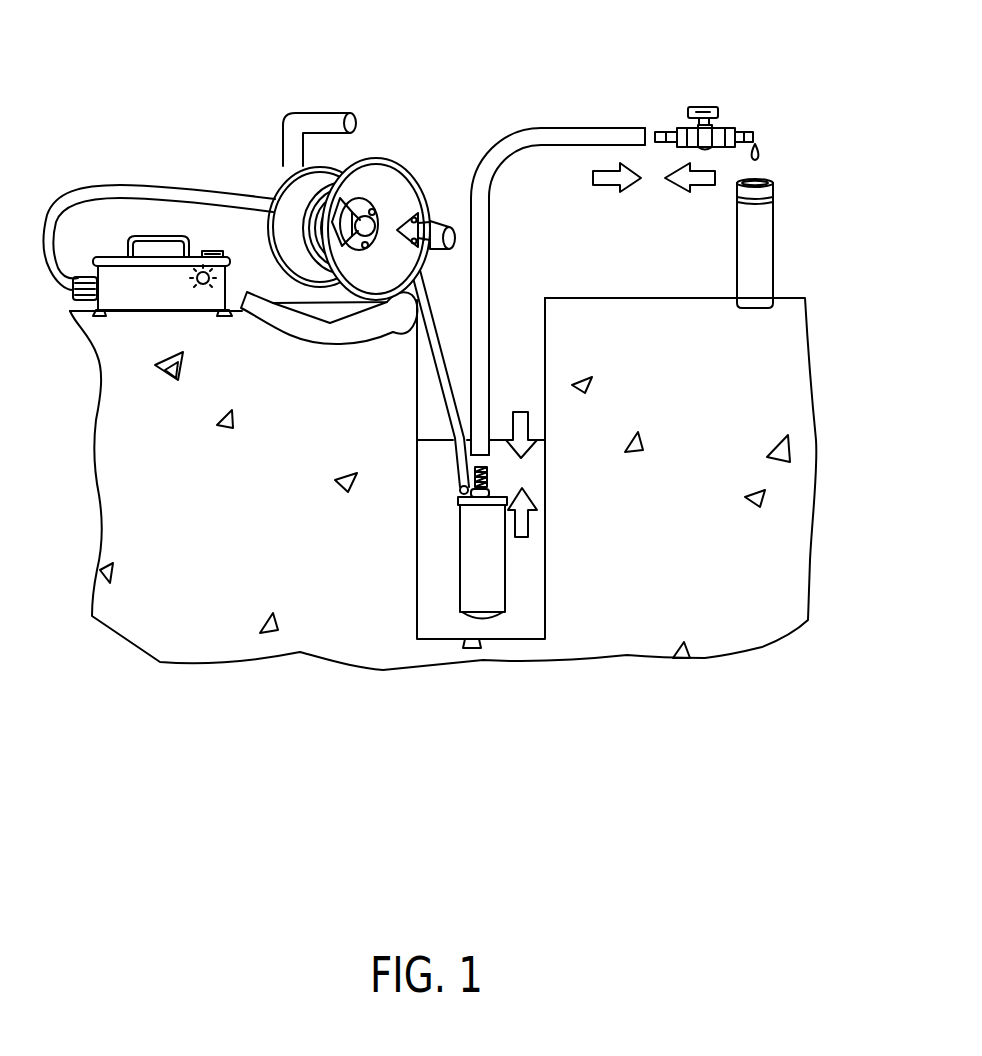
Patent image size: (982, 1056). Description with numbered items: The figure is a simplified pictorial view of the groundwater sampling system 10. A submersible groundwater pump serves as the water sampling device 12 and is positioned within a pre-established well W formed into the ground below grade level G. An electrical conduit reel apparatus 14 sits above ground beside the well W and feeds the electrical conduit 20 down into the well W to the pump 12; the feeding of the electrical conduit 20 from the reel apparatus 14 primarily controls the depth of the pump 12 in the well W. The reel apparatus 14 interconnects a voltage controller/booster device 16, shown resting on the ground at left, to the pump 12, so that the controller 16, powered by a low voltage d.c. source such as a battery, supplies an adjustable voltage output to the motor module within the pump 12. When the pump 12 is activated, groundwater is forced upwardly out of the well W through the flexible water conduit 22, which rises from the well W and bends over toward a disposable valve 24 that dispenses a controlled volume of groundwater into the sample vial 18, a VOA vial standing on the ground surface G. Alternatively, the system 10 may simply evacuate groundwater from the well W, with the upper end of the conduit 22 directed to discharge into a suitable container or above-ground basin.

The system 10 is at (574, 76).
The submersible pump 12 is at (458, 572).
The electrical conduit reel apparatus 14 is at (361, 158).
The voltage controller/booster device 16 is at (163, 233).
The sample vial 18 is at (737, 266).
The electrical conduit 20 is at (443, 345).
The water conduit 22 is at (489, 210).
The disposable valve 24 is at (707, 106).
The well W is at (545, 337).
The grade level G is at (611, 302).